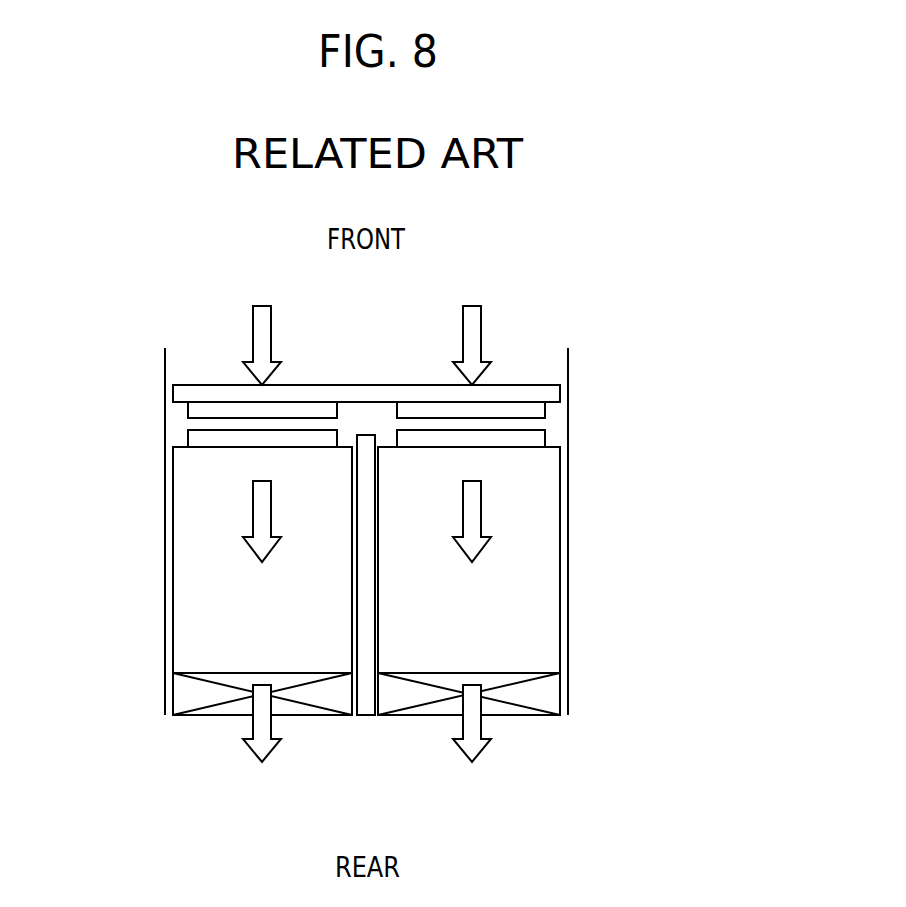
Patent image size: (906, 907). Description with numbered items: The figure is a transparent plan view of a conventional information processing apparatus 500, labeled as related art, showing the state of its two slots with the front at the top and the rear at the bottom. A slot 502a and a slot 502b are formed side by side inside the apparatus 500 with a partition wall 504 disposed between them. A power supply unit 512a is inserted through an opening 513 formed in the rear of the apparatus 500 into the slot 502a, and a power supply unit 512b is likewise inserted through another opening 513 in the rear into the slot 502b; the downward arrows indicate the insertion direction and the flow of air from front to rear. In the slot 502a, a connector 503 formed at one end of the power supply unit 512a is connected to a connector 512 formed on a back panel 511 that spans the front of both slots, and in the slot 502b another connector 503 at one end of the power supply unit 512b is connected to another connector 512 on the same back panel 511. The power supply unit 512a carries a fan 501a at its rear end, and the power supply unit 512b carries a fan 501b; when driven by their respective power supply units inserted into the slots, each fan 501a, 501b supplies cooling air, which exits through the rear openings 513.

The information processing apparatus 500 is at (634, 391).
The fan 501a is at (190, 693).
The fan 501b is at (402, 693).
The slot 502a is at (239, 627).
The slot 502b is at (510, 627).
The connector 503 is at (207, 440).
The partition wall 504 is at (367, 445).
The back panel 511 is at (420, 393).
The connector 512 is at (205, 412).
The power supply unit 512a is at (207, 570).
The power supply unit 512b is at (530, 568).
The opening 513 is at (291, 724).